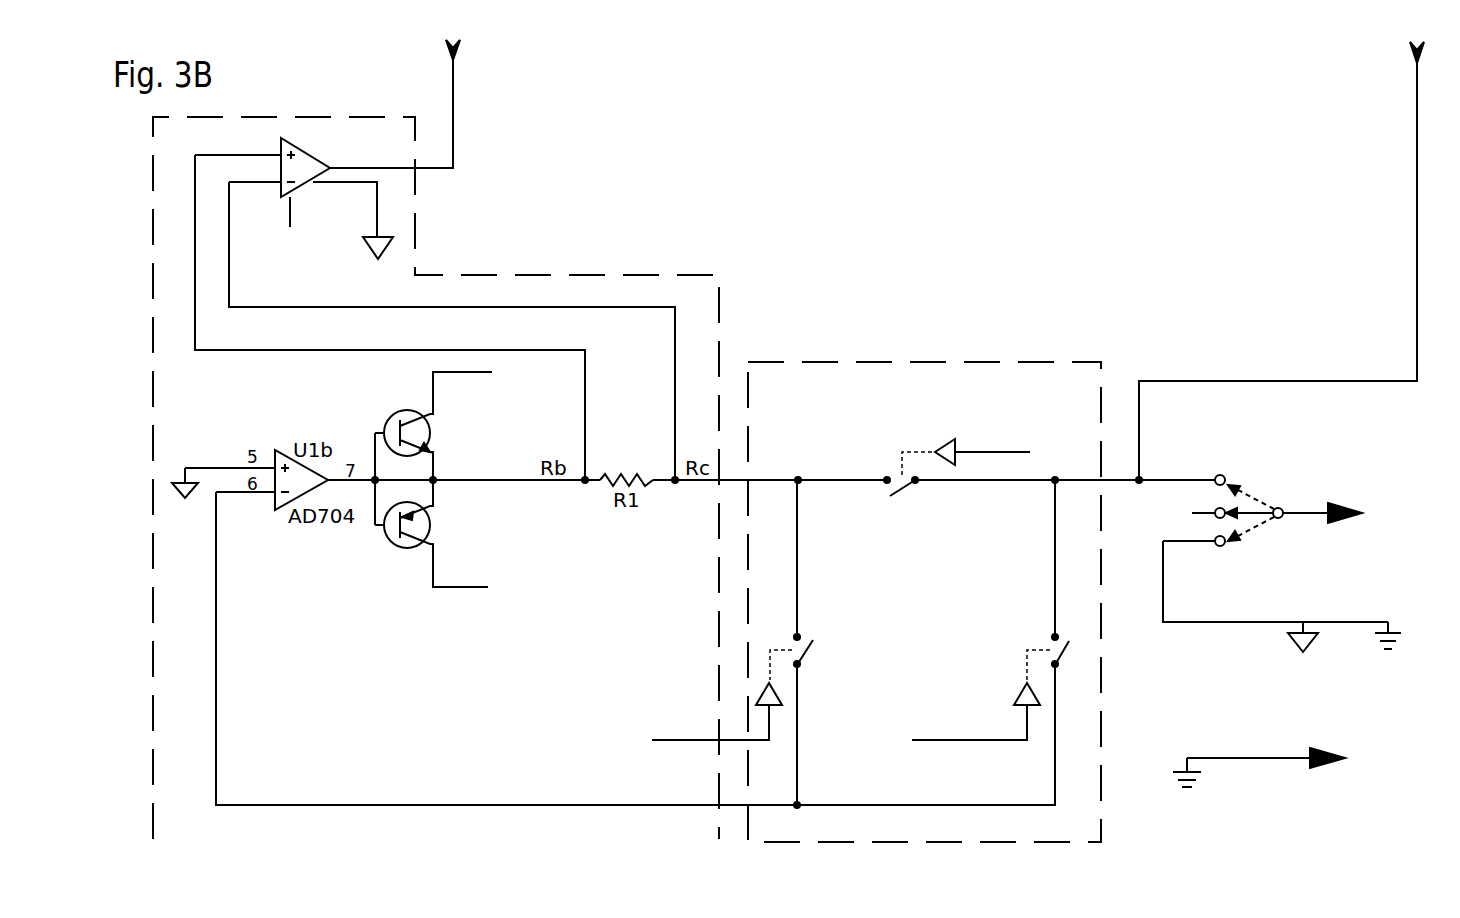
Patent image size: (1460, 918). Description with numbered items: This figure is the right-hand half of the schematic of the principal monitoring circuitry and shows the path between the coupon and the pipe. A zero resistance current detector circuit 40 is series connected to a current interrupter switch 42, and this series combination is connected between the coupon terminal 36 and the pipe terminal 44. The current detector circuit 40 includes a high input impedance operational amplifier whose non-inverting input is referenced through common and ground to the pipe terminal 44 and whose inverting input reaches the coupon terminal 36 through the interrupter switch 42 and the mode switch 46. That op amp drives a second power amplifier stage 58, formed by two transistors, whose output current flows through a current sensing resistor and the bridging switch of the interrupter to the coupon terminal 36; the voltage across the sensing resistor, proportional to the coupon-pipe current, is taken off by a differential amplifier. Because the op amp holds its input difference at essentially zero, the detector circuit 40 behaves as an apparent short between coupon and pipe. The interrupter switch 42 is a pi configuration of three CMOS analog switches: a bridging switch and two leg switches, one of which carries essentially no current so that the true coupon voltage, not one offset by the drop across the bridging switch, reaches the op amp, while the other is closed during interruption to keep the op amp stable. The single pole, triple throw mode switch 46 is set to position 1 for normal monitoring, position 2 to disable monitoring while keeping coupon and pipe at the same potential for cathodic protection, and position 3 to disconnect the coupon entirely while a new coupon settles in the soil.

The zero resistance current detector circuit 40 is at (333, 115).
The current interrupter switch 42 is at (1005, 361).
The second power amplifier stage 58 is at (370, 565).
The mode switch 46 is at (1295, 551).
The coupon terminal 36 is at (1317, 508).
The pipe terminal 44 is at (1280, 757).
The position 1 is at (1248, 497).
The position 2 is at (1247, 531).
The position 3 is at (1245, 510).